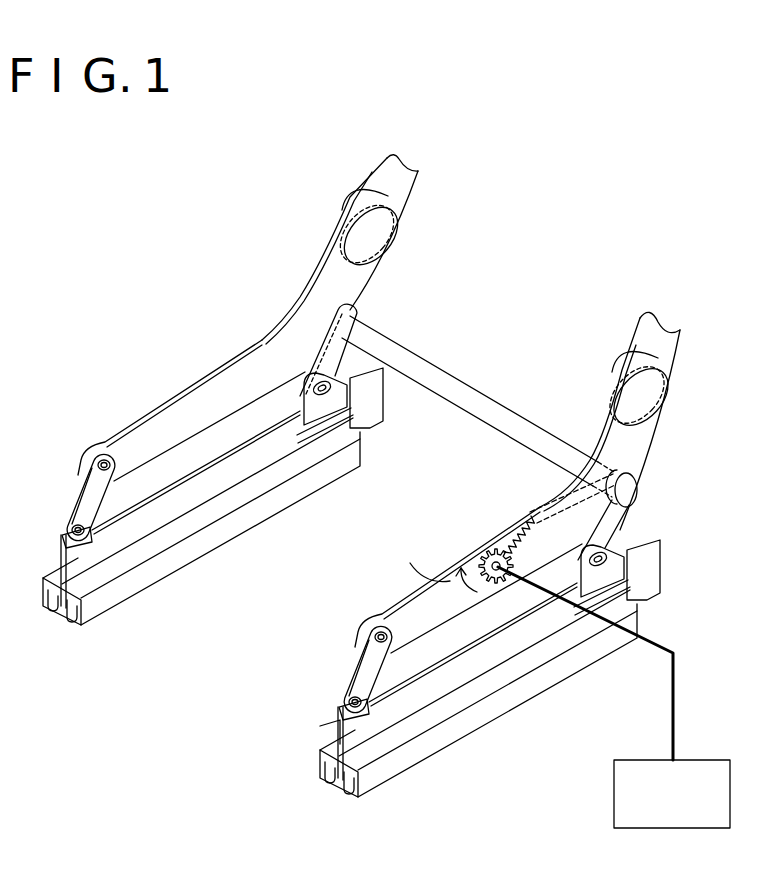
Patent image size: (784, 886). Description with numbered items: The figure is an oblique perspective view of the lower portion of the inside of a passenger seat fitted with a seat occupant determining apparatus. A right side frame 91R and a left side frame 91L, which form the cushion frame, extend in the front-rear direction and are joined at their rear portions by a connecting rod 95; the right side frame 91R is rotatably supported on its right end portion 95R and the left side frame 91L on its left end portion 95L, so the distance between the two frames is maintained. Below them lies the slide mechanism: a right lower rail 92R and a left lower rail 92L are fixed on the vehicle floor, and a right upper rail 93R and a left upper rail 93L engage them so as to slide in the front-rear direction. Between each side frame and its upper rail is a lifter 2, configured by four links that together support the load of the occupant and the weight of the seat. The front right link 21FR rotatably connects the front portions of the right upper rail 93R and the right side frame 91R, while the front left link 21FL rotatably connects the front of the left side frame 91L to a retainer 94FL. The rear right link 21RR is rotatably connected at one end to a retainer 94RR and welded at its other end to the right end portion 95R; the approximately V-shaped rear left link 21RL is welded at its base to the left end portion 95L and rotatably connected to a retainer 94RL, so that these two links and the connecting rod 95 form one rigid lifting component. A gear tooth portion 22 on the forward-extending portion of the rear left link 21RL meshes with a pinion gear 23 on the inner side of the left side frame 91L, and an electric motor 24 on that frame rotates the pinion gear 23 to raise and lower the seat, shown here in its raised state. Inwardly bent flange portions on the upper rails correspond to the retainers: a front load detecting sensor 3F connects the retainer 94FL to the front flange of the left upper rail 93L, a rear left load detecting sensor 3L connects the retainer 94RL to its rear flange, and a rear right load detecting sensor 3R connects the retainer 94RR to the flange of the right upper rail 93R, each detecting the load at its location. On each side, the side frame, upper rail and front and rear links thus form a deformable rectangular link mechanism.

The lifter 2 is at (477, 534).
The rear right load detecting sensor 3R is at (360, 413).
The rear left load detecting sensor 3L is at (633, 571).
The front load detecting sensor 3F is at (310, 733).
The front right link 21FR is at (83, 503).
The rear right link 21RR is at (335, 358).
The front left link 21FL is at (362, 668).
The rear left link 21RL is at (640, 537).
The gear tooth portion 22 is at (508, 535).
The pinion gear 23 is at (492, 547).
The electric motor 24 is at (703, 760).
The right side frame 91R is at (165, 405).
The left side frame 91L is at (393, 613).
The right lower rail 92R is at (97, 608).
The left lower rail 92L is at (367, 780).
The right upper rail 93R is at (143, 533).
The left upper rail 93L is at (447, 683).
The retainer 94RR is at (300, 395).
The retainer 94RL is at (620, 557).
The retainer 94FL is at (385, 672).
The connecting rod 95 is at (485, 410).
The right end portion 95R is at (355, 307).
The left end portion 95L is at (597, 473).